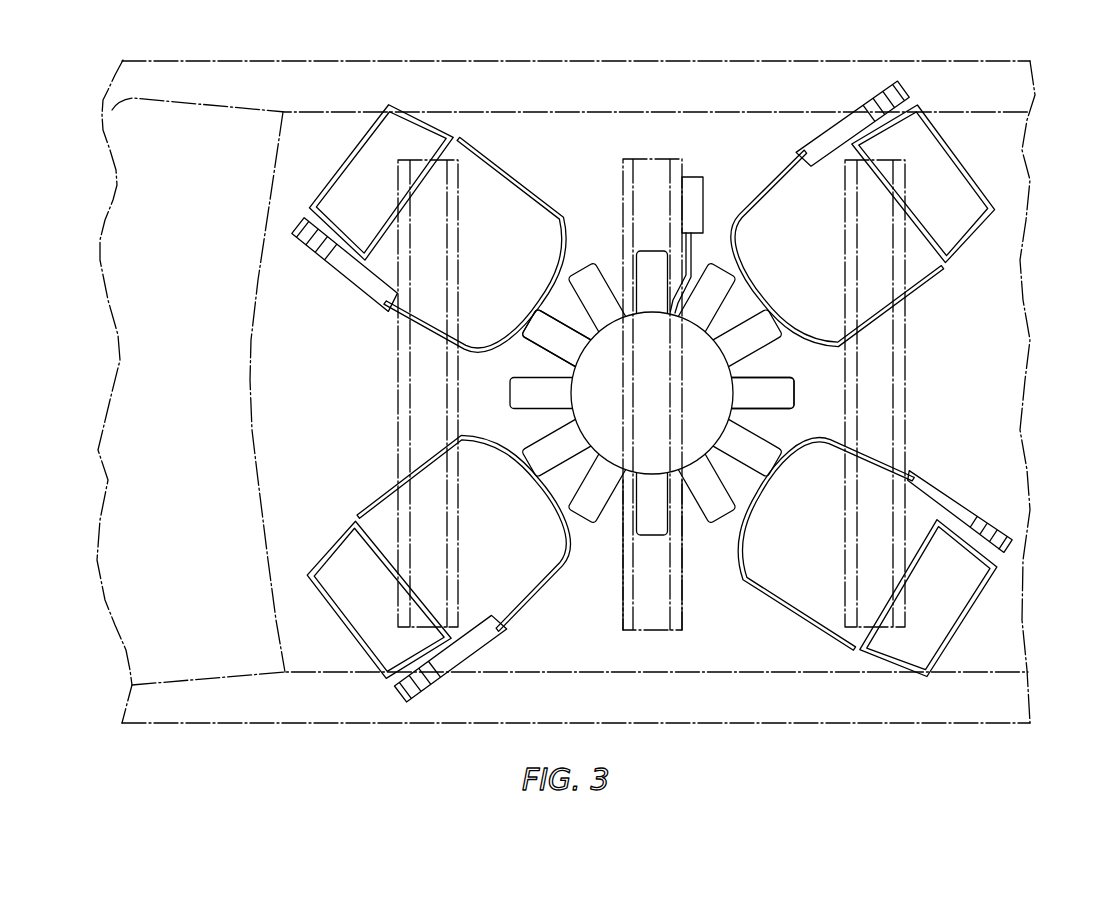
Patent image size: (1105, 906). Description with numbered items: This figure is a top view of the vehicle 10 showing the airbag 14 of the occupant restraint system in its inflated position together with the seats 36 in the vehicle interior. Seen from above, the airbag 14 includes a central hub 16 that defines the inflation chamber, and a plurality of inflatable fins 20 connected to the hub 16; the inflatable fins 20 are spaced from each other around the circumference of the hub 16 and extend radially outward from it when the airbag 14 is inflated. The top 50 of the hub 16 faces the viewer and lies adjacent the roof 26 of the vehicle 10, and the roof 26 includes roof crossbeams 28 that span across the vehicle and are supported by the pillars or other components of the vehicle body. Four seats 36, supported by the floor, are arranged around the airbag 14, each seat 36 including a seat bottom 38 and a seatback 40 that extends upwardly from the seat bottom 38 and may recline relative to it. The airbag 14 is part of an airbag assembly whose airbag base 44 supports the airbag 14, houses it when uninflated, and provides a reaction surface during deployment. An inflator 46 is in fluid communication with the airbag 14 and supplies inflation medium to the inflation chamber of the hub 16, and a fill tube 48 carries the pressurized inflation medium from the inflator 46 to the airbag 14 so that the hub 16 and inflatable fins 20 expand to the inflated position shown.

The vehicle 10 is at (1062, 210).
The airbag 14 is at (545, 425).
The hub 16 is at (568, 368).
The inflatable fins 20 is at (550, 308).
The roof 26 is at (700, 108).
The roof crossbeams 28 is at (420, 158).
The seats 36 is at (322, 186).
The seat bottom 38 is at (505, 160).
The seatback 40 is at (302, 222).
The airbag base 44 is at (688, 520).
The inflator 46 is at (692, 177).
The fill tube 48 is at (695, 250).
The top 50 is at (708, 408).